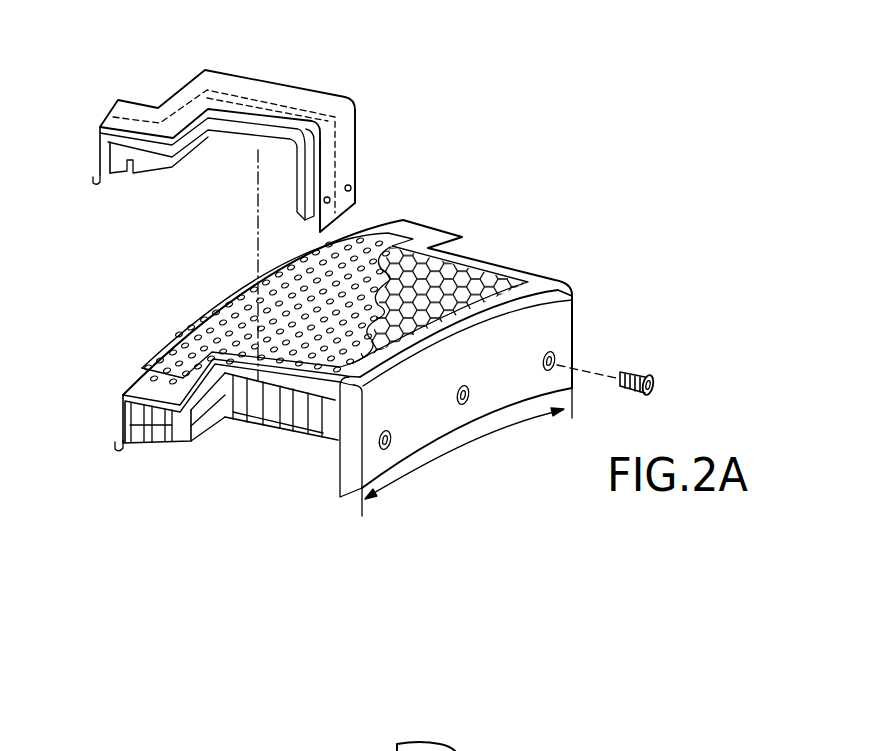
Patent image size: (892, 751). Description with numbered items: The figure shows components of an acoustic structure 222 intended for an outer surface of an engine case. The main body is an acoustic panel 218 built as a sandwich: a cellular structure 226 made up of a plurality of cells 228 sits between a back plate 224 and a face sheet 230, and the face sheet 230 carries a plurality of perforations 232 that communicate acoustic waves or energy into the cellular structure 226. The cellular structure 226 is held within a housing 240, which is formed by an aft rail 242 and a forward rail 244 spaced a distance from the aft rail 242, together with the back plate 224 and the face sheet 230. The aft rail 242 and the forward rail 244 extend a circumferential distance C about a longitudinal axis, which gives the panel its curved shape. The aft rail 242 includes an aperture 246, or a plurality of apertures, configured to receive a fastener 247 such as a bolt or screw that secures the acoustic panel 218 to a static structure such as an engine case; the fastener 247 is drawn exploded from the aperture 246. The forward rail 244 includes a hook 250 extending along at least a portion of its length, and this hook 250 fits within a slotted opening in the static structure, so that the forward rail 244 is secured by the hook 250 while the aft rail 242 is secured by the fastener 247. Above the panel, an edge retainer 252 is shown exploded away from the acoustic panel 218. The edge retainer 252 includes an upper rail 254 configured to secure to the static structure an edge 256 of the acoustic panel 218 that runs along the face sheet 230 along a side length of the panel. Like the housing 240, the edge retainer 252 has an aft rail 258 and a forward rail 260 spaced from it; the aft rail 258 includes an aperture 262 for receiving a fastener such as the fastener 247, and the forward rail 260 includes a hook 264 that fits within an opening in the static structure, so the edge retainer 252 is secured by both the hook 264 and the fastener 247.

The acoustic panel 218 is at (543, 283).
The acoustic structure 222 is at (480, 111).
The back plate 224 is at (258, 426).
The cellular structure 226 is at (462, 280).
The cells 228 is at (299, 412).
The face sheet 230 is at (238, 306).
The perforations 232 is at (362, 260).
The housing 240 is at (560, 313).
The aft rail 242 is at (563, 340).
The forward rail 244 is at (123, 397).
The aperture 246 is at (463, 404).
The fastener 247 is at (661, 376).
The hook 250 is at (117, 449).
The edge retainer 252 is at (218, 77).
The upper rail 254 is at (280, 93).
The edge 256 is at (186, 390).
The aft rail 258 is at (350, 147).
The forward rail 260 is at (98, 140).
The aperture 262 is at (352, 185).
The hook 264 is at (110, 186).
The circumferential distance C is at (403, 474).